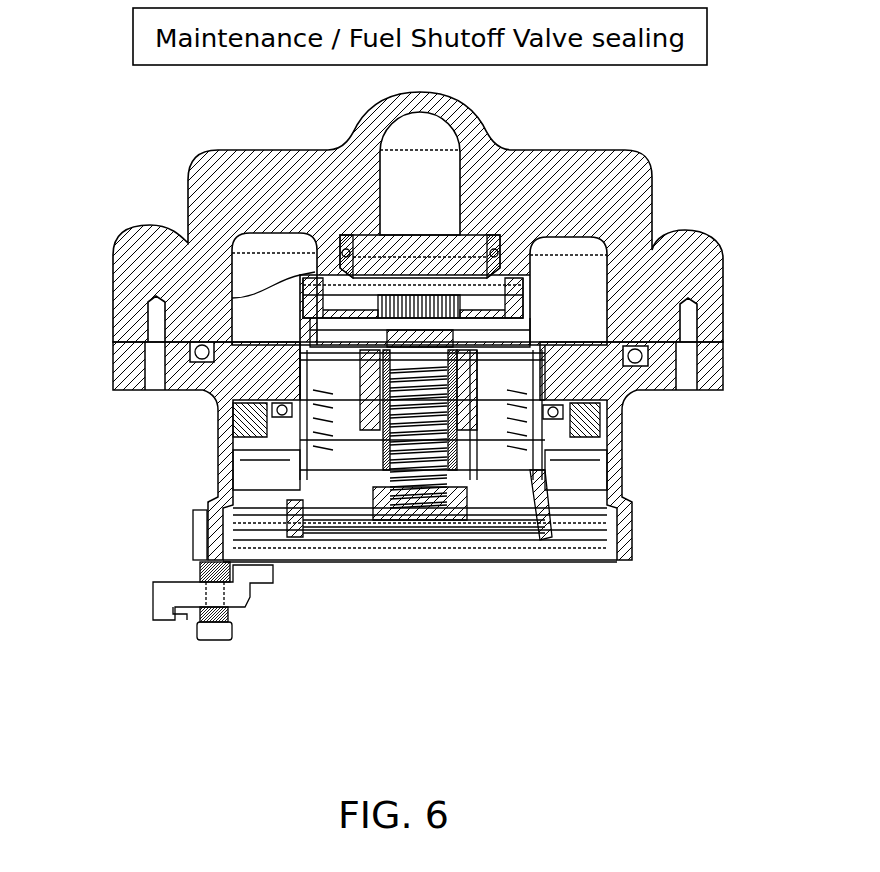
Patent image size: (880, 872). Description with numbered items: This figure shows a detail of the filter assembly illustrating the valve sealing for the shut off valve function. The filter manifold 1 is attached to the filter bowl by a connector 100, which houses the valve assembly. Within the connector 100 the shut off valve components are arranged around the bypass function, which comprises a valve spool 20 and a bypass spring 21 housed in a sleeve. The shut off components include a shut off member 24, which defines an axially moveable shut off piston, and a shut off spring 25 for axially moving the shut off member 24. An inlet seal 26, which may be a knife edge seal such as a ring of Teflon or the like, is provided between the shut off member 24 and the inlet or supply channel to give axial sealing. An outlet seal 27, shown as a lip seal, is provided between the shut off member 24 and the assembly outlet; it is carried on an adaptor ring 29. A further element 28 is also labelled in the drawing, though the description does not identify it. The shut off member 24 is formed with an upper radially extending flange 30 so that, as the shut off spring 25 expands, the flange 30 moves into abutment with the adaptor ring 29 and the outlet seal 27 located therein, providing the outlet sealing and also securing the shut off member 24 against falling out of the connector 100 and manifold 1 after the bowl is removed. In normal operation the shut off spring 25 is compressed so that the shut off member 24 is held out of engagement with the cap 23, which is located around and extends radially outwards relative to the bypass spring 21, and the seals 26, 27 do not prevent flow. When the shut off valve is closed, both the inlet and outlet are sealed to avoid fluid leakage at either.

The filter manifold 1 is at (636, 160).
The valve spool 20 is at (368, 312).
The bypass spring 21 is at (212, 388).
The cap 23 is at (378, 500).
The shut off member 24 is at (543, 538).
The shut off spring 25 is at (575, 355).
The inlet seal 26 is at (575, 485).
The outlet seal 27 is at (222, 400).
The seal 28 is at (267, 453).
The adaptor ring 29 is at (217, 428).
The upper radially extending flange 30 is at (623, 415).
The connector 100 is at (633, 547).